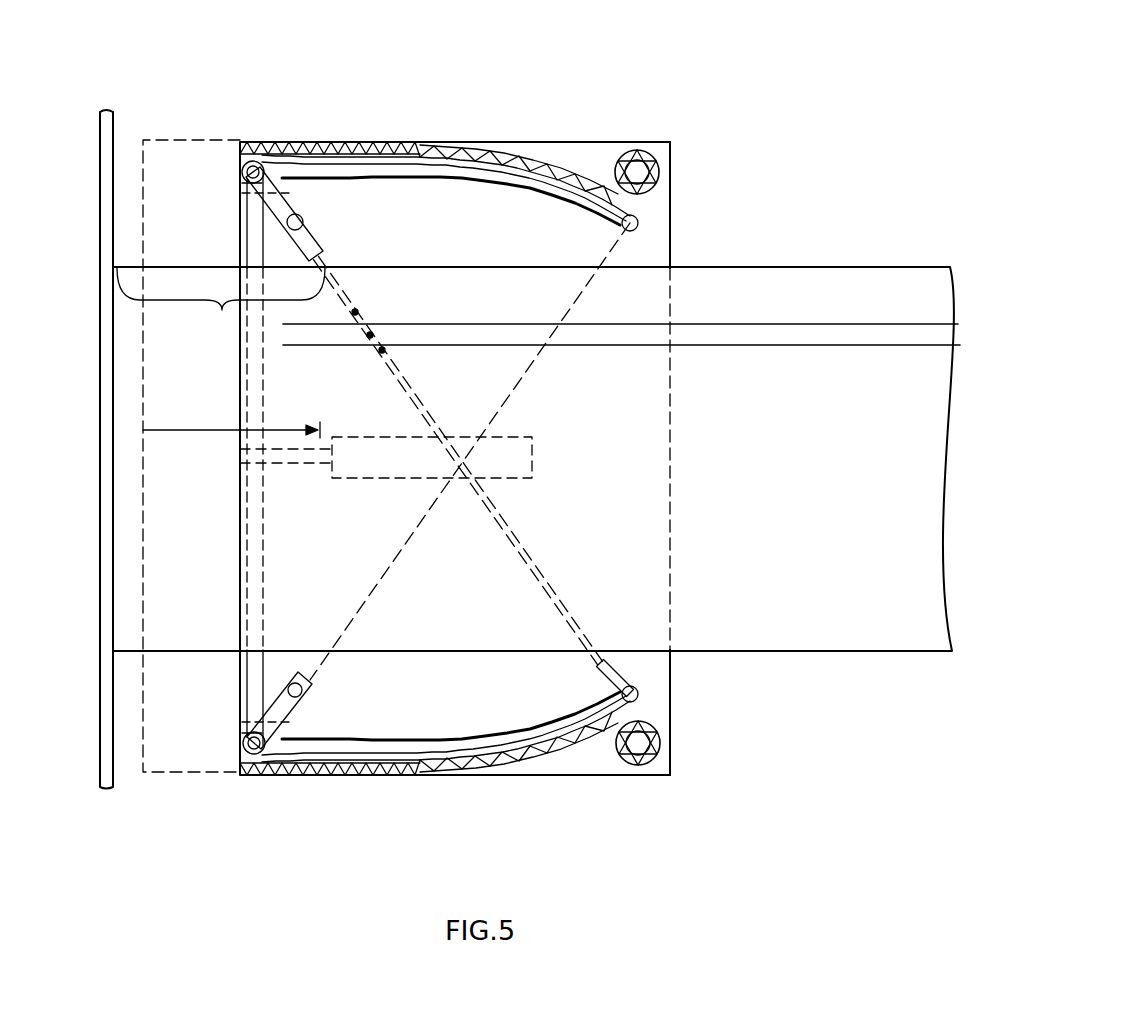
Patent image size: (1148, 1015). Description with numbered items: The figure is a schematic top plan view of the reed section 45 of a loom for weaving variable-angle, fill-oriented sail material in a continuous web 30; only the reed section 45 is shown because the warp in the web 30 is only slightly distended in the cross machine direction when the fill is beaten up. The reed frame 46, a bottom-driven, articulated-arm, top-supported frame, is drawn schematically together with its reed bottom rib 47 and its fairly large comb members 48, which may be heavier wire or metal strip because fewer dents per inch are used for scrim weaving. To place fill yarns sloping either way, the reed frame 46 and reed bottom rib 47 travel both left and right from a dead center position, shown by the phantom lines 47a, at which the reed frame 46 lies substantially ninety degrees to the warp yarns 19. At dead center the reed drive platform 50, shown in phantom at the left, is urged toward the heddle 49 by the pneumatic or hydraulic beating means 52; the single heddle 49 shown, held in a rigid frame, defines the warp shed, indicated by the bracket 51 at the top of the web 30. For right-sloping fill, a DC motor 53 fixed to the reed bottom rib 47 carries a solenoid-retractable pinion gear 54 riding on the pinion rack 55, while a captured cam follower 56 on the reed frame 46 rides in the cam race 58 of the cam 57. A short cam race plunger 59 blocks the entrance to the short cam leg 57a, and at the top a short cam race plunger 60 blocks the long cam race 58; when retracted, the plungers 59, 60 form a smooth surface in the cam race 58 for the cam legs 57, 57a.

The warp yarns 19 is at (730, 323).
The web 30 is at (843, 267).
The reed section 45 is at (538, 98).
The reed frame 46 is at (320, 250).
The reed bottom rib 47 is at (548, 578).
The phantom lines 47a is at (268, 548).
The comb members 48 is at (358, 311).
The heddle 49 is at (113, 787).
The reed drive platform 50 is at (160, 137).
The travel distance 51 is at (221, 304).
The beating means 52 is at (347, 430).
The DC motor 53 is at (660, 190).
The pinion gear 54 is at (659, 166).
The pinion rack 55 is at (305, 140).
The cam follower 56 is at (305, 224).
The cam 57 is at (430, 180).
The short cam leg 57a is at (308, 690).
The cam race 58 is at (550, 185).
The short cam race plunger 59 is at (240, 200).
The short cam race plunger 60 is at (283, 180).